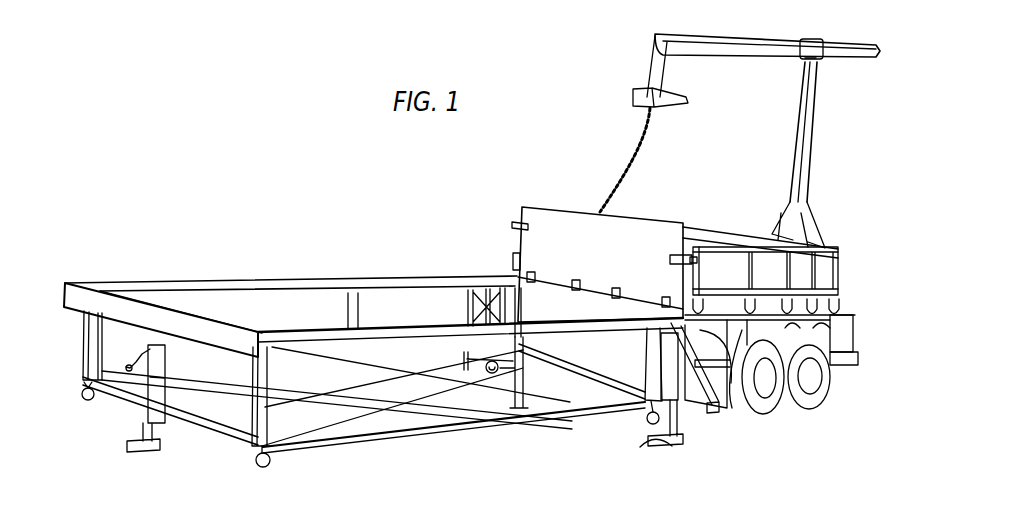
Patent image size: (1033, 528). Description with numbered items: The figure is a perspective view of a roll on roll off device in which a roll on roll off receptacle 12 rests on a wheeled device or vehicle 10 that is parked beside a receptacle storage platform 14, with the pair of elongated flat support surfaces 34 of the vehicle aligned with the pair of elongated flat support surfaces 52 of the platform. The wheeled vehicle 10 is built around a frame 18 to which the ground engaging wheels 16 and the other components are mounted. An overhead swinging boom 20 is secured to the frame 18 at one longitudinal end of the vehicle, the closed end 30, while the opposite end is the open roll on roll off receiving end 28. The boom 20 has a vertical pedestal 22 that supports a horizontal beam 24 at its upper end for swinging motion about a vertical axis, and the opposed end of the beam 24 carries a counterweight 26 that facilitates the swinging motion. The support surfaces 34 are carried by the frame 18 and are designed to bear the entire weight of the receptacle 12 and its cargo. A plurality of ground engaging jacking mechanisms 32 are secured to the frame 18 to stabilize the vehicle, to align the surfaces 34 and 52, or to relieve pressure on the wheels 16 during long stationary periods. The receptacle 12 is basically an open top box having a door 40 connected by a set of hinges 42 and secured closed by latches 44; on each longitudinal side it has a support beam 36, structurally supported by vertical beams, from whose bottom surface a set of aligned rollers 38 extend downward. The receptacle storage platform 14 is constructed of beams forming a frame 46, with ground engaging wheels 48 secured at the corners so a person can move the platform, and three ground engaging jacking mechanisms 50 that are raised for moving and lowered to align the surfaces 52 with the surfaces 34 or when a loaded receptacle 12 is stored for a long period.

The wheeled device or vehicle 10 is at (852, 392).
The roll on roll off receptacle 12 is at (553, 194).
The receptacle storage platform 14 is at (263, 263).
The ground engaging wheels 16 is at (813, 402).
The frame 18 is at (858, 354).
The overhead swinging boom 20 is at (828, 104).
The vertical pedestal 22 is at (811, 156).
The horizontal beam 24 is at (752, 48).
The counterweight 26 is at (689, 106).
The open roll on roll off receiving end 28 is at (692, 420).
The closed end 30 is at (851, 332).
The ground engaging jacking mechanism 32 is at (672, 444).
The pair of elongated flat support surfaces 34 is at (732, 408).
The support beam 36 is at (738, 286).
The aligned rollers 38 is at (838, 308).
The door 40 is at (582, 251).
The hinges 42 is at (578, 282).
The latches 44 is at (681, 254).
The frame 46 is at (427, 438).
The ground engaging wheels 48 is at (87, 402).
The ground engaging jacking mechanisms 50 is at (153, 452).
The pair of elongated flat support surfaces 52 is at (351, 284).